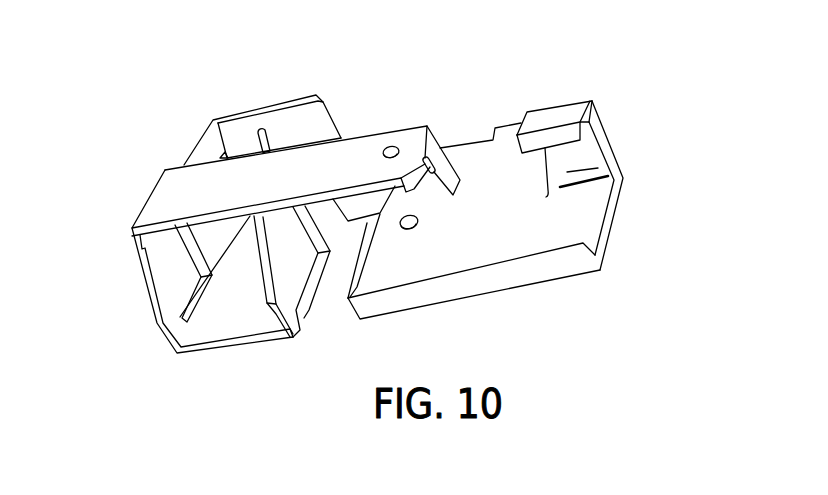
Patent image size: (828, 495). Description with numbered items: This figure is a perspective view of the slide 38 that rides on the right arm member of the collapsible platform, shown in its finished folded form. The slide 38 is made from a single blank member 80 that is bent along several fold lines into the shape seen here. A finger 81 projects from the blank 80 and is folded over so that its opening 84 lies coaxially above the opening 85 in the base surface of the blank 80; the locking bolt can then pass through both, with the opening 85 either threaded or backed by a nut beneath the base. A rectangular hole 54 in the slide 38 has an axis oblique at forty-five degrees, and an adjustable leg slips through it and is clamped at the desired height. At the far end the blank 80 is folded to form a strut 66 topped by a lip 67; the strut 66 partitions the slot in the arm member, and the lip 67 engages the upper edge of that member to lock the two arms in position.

The slide 38 is at (417, 299).
The rectangular hole 54 is at (258, 216).
The strut 66 is at (594, 148).
The lip 67 is at (552, 117).
The blank member 80 is at (594, 205).
The finger 81 is at (345, 148).
The opening 84 is at (396, 140).
The opening 85 is at (406, 230).